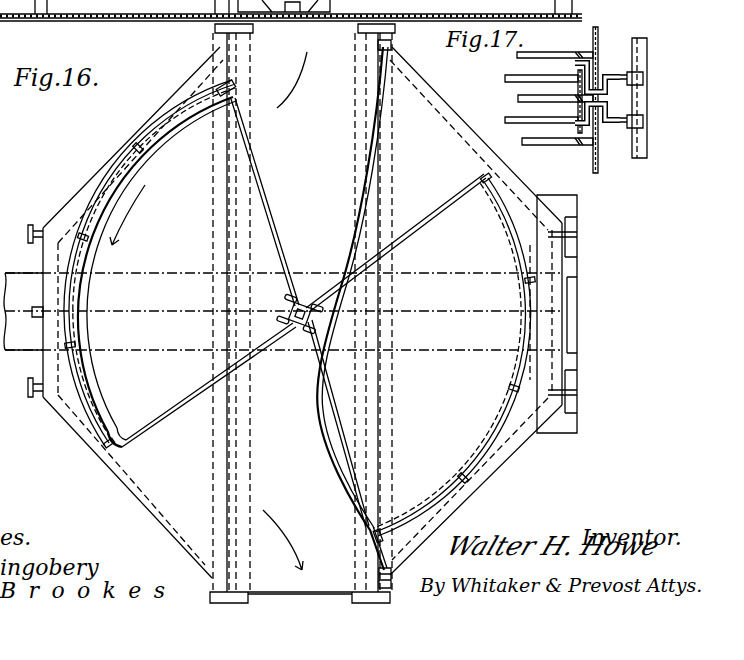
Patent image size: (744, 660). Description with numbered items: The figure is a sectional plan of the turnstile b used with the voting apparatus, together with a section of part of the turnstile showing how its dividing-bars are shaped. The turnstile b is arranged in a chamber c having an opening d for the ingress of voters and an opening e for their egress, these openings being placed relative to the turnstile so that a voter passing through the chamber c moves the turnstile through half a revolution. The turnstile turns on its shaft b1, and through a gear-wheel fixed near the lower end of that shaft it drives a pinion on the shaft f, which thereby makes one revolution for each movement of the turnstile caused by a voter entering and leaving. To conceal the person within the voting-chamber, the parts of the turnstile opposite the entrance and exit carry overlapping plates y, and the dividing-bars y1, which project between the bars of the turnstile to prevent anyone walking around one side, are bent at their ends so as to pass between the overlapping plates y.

In FIG. 16, the turnstile b is at (263, 178).
In FIG. 17, the turnstile b is at (550, 142).
In FIG. 16, the shaft of the turnstile b1 is at (296, 336).
In FIG. 16, the chamber c is at (302, 313).
In FIG. 16, the opening d is at (296, 63).
In FIG. 16, the opening e is at (286, 553).
In FIG. 16, the shaft f is at (34, 319).
In FIG. 16, the overlapping plates y is at (72, 263).
In FIG. 17, the overlapping plates y is at (587, 72).
In FIG. 16, the dividing-bars y1 is at (384, 178).
In FIG. 17, the dividing-bars y1 is at (512, 117).